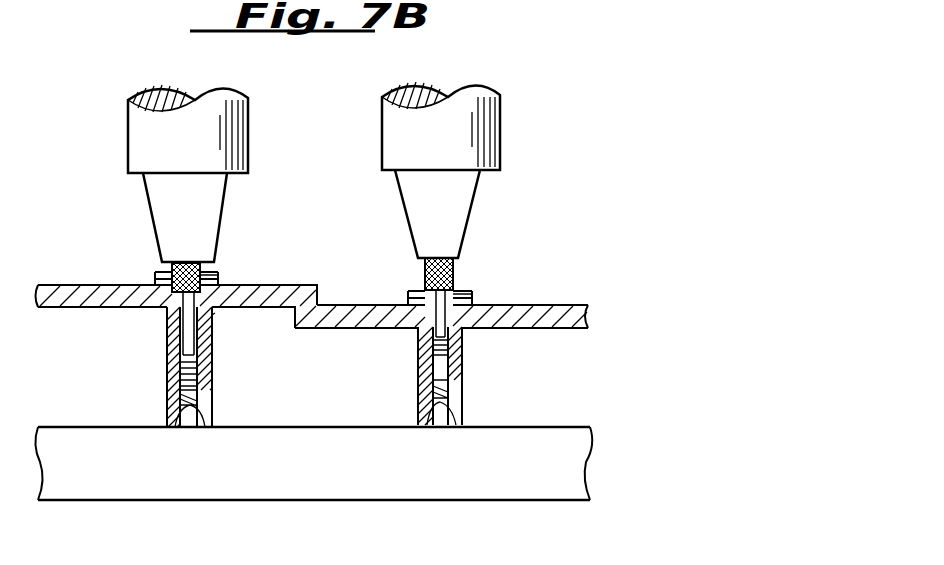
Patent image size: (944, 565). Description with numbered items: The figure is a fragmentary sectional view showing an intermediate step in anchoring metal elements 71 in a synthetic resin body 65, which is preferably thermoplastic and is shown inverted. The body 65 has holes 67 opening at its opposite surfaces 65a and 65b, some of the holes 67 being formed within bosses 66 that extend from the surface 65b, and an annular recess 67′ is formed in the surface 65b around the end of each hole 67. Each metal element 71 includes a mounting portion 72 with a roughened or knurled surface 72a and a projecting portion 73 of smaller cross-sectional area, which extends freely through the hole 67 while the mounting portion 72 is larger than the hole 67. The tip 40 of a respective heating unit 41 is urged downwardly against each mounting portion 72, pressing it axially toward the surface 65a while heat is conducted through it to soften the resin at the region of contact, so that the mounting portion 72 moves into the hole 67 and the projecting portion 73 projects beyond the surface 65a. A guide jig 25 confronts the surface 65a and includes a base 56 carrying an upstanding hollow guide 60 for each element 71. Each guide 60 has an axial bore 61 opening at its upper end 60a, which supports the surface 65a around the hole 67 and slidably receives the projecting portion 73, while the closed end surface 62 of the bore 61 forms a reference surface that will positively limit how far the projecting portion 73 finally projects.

The guide jig 25 is at (548, 410).
The tip 40 is at (222, 188).
The heating unit 41 is at (248, 140).
The base 56 is at (588, 466).
The guide 60 is at (174, 410).
The upper end of guide 60a is at (172, 308).
The axial bore 61 is at (205, 394).
The closed end surface of bore 62 is at (188, 427).
The synthetic resin body 65 is at (596, 292).
The surface of body 65a is at (330, 330).
The surface of body 65b is at (322, 300).
The boss 66 is at (222, 274).
The hole 67 is at (212, 314).
The annular recess 67′ is at (214, 272).
The metal element 71 is at (185, 340).
The mounting portion 72 is at (154, 272).
The knurled surface 72a is at (188, 262).
The projecting portion 73 is at (212, 350).